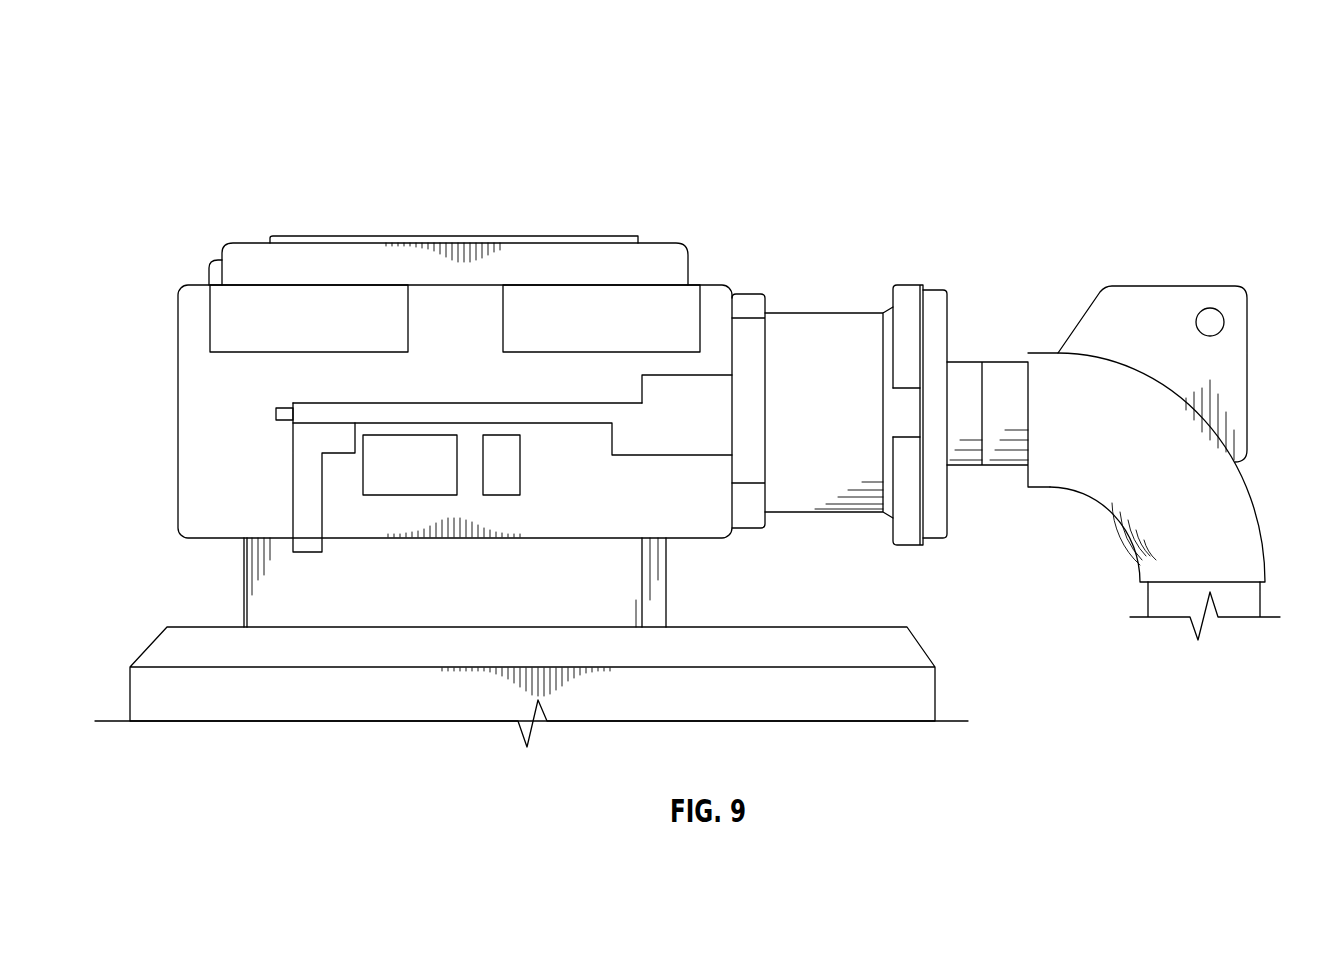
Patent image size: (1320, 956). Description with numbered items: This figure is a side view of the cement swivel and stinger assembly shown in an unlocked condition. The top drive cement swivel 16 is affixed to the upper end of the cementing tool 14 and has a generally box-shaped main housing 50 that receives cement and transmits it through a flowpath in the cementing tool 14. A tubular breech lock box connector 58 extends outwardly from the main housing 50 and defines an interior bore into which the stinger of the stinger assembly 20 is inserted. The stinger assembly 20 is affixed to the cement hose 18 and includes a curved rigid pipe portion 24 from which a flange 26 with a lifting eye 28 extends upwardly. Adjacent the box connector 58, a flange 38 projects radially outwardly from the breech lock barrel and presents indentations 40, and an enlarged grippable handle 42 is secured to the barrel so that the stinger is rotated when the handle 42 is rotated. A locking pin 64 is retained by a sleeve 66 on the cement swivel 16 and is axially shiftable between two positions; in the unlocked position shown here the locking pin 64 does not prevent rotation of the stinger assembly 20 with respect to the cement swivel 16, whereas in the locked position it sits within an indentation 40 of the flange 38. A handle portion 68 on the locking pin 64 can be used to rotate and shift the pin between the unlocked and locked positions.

The cementing tool 14 is at (156, 640).
The top drive cement swivel 16 is at (476, 207).
The cement hose 18 is at (1155, 607).
The stinger assembly 20 is at (345, 132).
The curved rigid pipe portion 24 is at (1253, 503).
The flange 26 is at (1240, 361).
The lifting eye 28 is at (1219, 322).
The flange 38 is at (907, 292).
The indentation 40 is at (903, 437).
The grippable handle 42 is at (937, 296).
The main housing 50 is at (193, 437).
The breech lock box connector 58 is at (795, 327).
The locking pin 64 is at (578, 388).
The sleeve 66 is at (707, 375).
The handle portion 68 is at (308, 533).